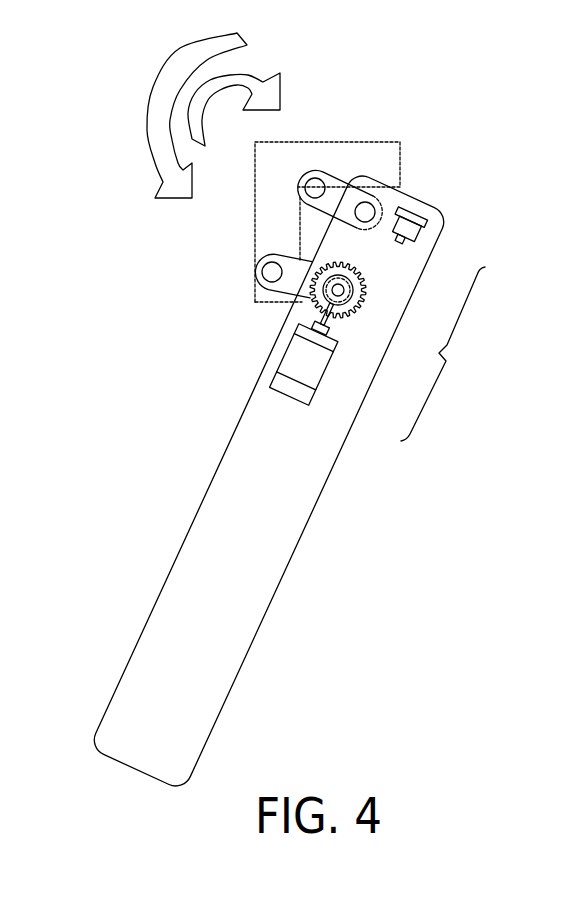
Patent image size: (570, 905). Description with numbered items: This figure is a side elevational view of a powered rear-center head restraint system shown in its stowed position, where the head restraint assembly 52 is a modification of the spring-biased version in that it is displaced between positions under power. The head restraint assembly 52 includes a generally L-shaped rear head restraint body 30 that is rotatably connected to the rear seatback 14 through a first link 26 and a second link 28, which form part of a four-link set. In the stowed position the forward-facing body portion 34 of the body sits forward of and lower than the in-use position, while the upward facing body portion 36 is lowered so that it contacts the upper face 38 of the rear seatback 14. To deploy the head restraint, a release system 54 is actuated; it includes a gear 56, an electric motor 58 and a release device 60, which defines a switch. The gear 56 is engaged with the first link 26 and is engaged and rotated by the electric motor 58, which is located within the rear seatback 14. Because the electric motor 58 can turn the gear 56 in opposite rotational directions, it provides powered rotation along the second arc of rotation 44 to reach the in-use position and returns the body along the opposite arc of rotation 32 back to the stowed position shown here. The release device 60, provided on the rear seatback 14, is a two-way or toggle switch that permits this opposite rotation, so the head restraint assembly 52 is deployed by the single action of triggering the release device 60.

The rear seatback 14 is at (280, 553).
The first link 26 is at (292, 285).
The second link 28 is at (332, 193).
The rear head restraint body 30 is at (278, 162).
The arc of rotation 32 is at (168, 70).
The forward-facing body portion 34 is at (265, 217).
The upward facing body portion 36 is at (382, 157).
The upper face 38 is at (429, 178).
The second arc of rotation 44 is at (254, 75).
The head restraint assembly 52 is at (388, 108).
The release system 54 is at (443, 354).
The gear 56 is at (363, 300).
The electric motor 58 is at (333, 374).
The release device 60 is at (400, 244).